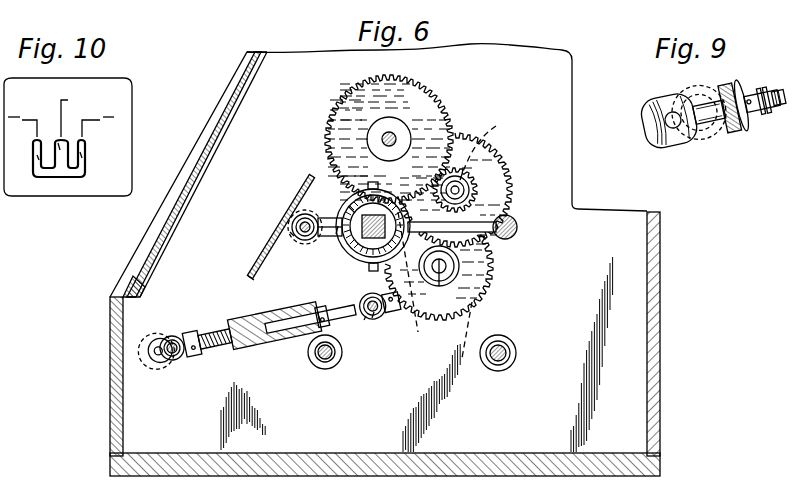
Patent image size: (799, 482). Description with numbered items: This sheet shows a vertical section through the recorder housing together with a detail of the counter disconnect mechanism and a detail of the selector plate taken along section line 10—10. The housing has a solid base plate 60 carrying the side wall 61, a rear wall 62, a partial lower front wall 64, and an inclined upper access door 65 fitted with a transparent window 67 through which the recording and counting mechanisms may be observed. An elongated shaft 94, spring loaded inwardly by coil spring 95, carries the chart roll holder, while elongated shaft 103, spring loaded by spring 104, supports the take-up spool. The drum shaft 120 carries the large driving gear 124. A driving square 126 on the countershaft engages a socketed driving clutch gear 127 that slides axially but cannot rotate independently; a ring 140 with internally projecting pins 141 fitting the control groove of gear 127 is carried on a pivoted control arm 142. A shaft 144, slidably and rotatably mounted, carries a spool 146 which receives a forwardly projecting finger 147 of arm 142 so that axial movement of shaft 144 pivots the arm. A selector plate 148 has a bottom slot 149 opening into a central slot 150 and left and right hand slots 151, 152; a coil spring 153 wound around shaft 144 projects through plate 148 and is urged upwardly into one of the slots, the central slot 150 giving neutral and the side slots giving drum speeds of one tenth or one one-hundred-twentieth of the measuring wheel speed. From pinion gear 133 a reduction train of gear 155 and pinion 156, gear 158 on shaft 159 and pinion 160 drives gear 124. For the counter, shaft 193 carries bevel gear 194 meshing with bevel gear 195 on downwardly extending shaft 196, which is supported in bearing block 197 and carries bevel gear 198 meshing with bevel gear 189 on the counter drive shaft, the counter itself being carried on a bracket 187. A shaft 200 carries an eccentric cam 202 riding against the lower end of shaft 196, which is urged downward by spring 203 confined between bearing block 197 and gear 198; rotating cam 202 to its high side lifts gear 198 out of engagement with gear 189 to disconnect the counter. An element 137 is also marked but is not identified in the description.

In FIG. 6, the pointer rod 10 is at (254, 244).
In FIG. 6, the base plate 60 is at (474, 459).
In FIG. 6, the side wall 61 is at (628, 271).
In FIG. 6, the rear wall 62 is at (660, 338).
In FIG. 6, the partial lower wall 64 is at (113, 381).
In FIG. 6, the upper access door 65 is at (116, 294).
In FIG. 6, the transparent window 67 is at (163, 234).
In FIG. 6, the elongated shaft 94 is at (514, 353).
In FIG. 6, the coil spring 95 is at (497, 348).
In FIG. 6, the elongated shaft 103 is at (320, 360).
In FIG. 6, the spring 104 is at (322, 363).
In FIG. 6, the shaft 120 is at (391, 139).
In FIG. 6, the gear 124 is at (407, 90).
In FIG. 6, the driving square 126 is at (359, 233).
In FIG. 6, the driving clutch gear 127 is at (389, 244).
In FIG. 6, the pinion gear 133 is at (433, 290).
In FIG. 6, the gear hub pin 137 is at (439, 290).
In FIG. 6, the ring 140 is at (353, 215).
In FIG. 6, the internally projecting pins 141 is at (348, 206).
In FIG. 6, the control arm 142 is at (465, 230).
In FIG. 6, the shaft 144 is at (303, 238).
In FIG. 6, the spool 146 is at (290, 227).
In FIG. 6, the forwardly projecting finger 147 is at (332, 217).
In FIG. 6, the selector plate 148 is at (252, 272).
In FIG. 10, the selector plate 148 is at (100, 183).
In FIG. 10, the bottom slot 149 is at (65, 173).
In FIG. 10, the central slot 150 is at (60, 152).
In FIG. 10, the left hand slot 151 is at (37, 158).
In FIG. 10, the right hand slot 152 is at (82, 155).
In FIG. 6, the coil spring 153 is at (292, 232).
In FIG. 6, the gear 155 is at (487, 287).
In FIG. 6, the pinion 156 is at (448, 284).
In FIG. 6, the gear 158 is at (505, 186).
In FIG. 6, the shaft 159 is at (456, 190).
In FIG. 6, the pinion 160 is at (497, 125).
In FIG. 6, the bracket 187 is at (172, 358).
In FIG. 6, the bevel gear 189 is at (186, 360).
In FIG. 9, the bevel gear 189 is at (705, 93).
In FIG. 6, the shaft 193 is at (364, 322).
In FIG. 6, the bevel gear 194 is at (363, 303).
In FIG. 6, the bevel gear 195 is at (372, 320).
In FIG. 6, the downwardly extending shaft 196 is at (269, 318).
In FIG. 9, the downwardly extending shaft 196 is at (708, 105).
In FIG. 6, the bearing block 197 is at (264, 343).
In FIG. 6, the bevel gear 198 is at (198, 318).
In FIG. 9, the bevel gear 198 is at (733, 132).
In FIG. 6, the shaft 200 is at (160, 351).
In FIG. 9, the shaft 200 is at (675, 128).
In FIG. 6, the eccentric cam 202 is at (146, 348).
In FIG. 9, the eccentric cam 202 is at (656, 132).
In FIG. 6, the spring 203 is at (222, 352).
In FIG. 9, the spring 203 is at (772, 118).